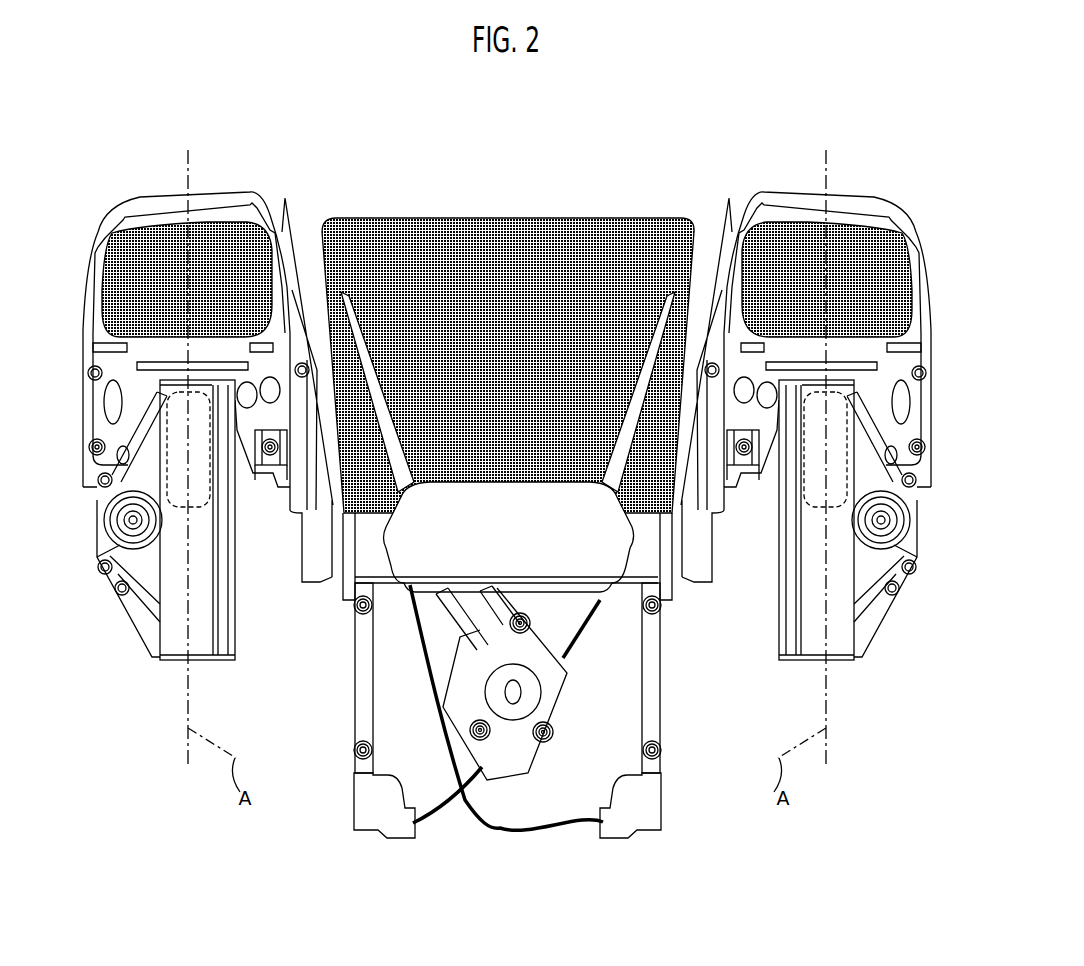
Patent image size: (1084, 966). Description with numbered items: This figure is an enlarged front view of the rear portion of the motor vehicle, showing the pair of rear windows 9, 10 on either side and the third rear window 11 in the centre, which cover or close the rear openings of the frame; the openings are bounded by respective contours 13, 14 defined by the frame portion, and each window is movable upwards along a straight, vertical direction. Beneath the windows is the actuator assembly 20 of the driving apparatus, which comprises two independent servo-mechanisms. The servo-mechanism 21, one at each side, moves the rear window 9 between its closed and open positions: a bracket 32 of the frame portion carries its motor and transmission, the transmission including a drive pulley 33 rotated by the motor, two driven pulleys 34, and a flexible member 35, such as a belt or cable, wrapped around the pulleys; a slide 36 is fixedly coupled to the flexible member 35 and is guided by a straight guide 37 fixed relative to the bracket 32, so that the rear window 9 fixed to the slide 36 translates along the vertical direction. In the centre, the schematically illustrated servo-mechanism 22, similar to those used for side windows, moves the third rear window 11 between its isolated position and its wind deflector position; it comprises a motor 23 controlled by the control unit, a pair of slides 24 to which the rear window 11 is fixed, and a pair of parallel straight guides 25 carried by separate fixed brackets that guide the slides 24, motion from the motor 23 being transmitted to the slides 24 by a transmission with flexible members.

The rear window 9 is at (790, 237).
The rear window 10 is at (213, 237).
The third rear window 11 is at (497, 255).
The contour 13 is at (906, 218).
The contour 14 is at (107, 217).
The actuator assembly 20 is at (512, 725).
The servo-mechanism 21 is at (112, 552).
The servo-mechanism 22 is at (505, 785).
The motor 23 is at (475, 597).
The slides 24 is at (348, 578).
The straight guides 25 is at (357, 702).
The bracket 32 is at (137, 617).
The drive pulley 33 is at (123, 530).
The driven pulleys 34 is at (166, 398).
The flexible member 35 is at (100, 478).
The slide 36 is at (178, 508).
The straight guide 37 is at (262, 586).